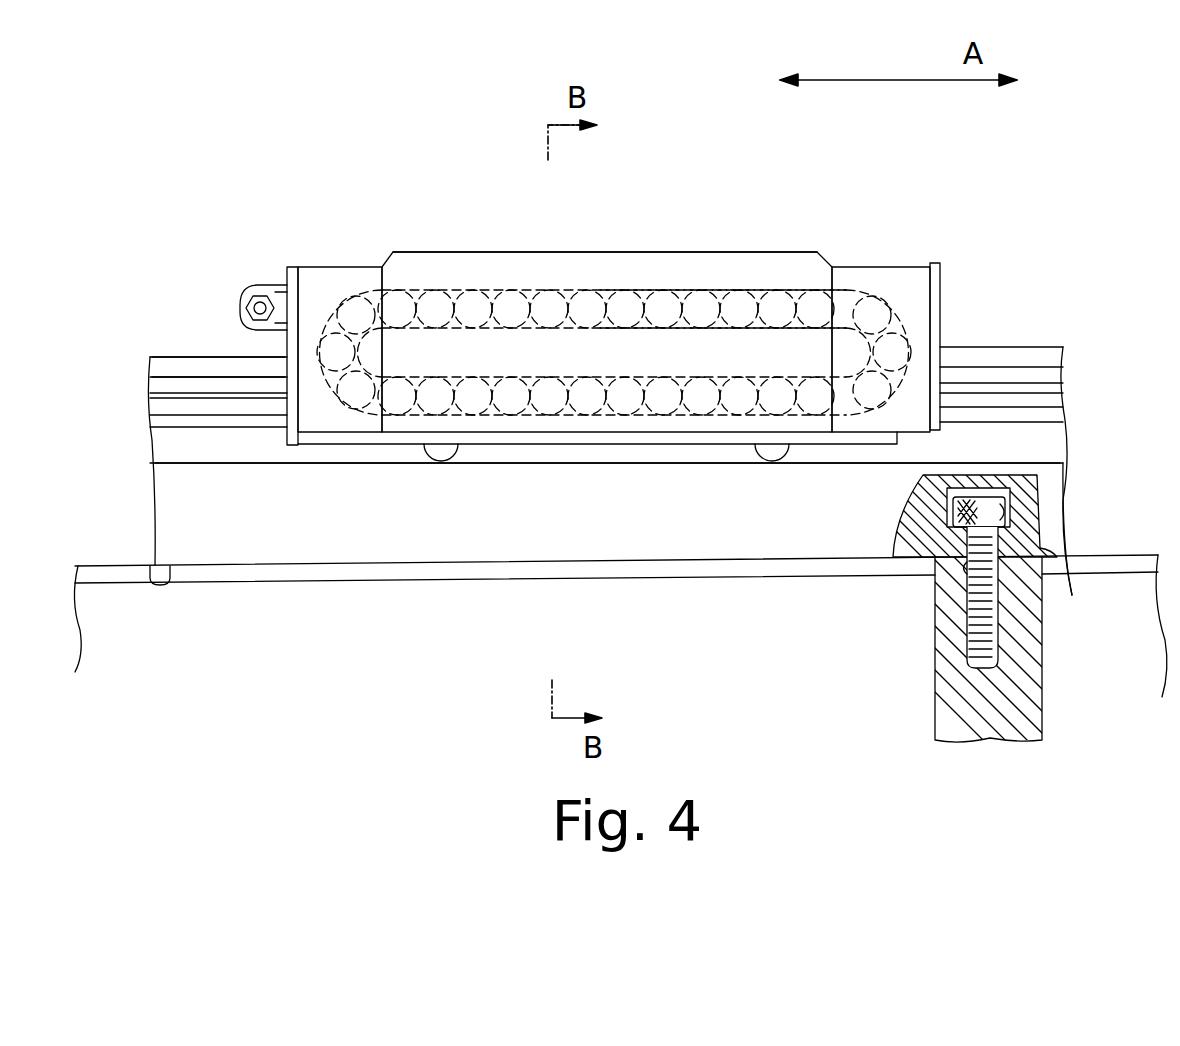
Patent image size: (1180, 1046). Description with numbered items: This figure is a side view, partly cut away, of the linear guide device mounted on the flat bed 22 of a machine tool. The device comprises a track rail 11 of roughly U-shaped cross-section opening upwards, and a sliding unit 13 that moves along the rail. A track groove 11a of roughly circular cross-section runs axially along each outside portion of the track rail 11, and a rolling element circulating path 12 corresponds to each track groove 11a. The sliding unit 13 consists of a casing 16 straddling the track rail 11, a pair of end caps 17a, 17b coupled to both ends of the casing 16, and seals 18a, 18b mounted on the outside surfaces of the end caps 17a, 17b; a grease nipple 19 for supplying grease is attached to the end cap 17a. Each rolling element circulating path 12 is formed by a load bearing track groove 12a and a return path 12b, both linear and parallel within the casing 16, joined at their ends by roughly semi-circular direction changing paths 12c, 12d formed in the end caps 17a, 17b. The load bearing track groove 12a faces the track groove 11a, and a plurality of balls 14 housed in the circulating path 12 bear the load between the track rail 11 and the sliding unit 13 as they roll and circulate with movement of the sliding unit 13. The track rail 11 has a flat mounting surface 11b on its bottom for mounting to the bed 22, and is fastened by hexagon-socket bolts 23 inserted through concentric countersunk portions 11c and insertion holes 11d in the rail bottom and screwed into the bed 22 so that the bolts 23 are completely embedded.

The track rail 11 is at (1047, 345).
The track groove 11a is at (200, 405).
The flat mounting surface 11b is at (152, 572).
The countersunk portion 11c is at (1075, 546).
The insertion hole 11d is at (962, 571).
The rolling element circulating path 12 is at (588, 290).
The load bearing track groove 12a is at (662, 415).
The return path 12b is at (706, 290).
The direction changing path 12c is at (325, 356).
The direction changing path 12d is at (907, 343).
The sliding unit 13 is at (762, 247).
The balls 14 is at (437, 293).
The casing 16 is at (639, 254).
The end cap 17a is at (334, 267).
The end cap 17b is at (872, 268).
The seal 18a is at (293, 267).
The seal 18b is at (936, 263).
The grease nipple 19 is at (252, 288).
The bed 22 is at (1122, 558).
The bolt 23 is at (975, 617).